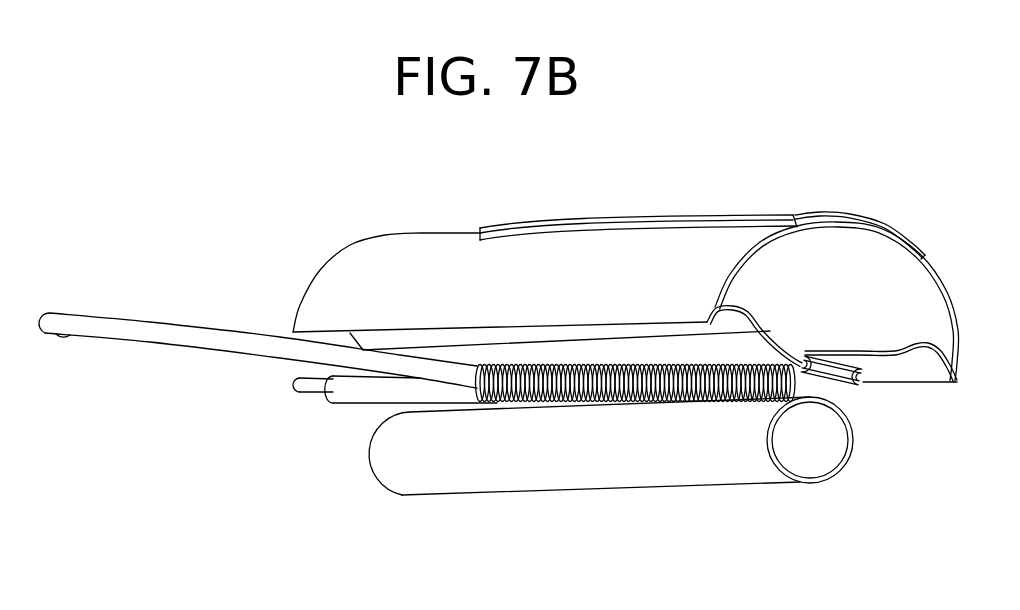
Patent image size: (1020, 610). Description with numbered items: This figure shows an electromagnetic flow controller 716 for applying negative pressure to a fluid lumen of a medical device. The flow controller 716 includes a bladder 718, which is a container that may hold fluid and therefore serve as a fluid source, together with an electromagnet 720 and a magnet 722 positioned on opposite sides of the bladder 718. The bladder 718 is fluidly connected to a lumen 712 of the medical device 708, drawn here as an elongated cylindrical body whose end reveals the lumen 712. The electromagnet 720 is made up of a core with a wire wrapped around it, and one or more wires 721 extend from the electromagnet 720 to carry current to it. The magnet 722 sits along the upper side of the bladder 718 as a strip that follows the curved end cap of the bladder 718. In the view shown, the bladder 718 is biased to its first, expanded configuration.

The medical device 708 is at (600, 484).
The lumen 712 is at (809, 440).
The flow controller 716 is at (770, 200).
The bladder 718 is at (348, 279).
The electromagnet 720 is at (494, 400).
The wires 721 is at (113, 333).
The magnet 722 is at (607, 219).